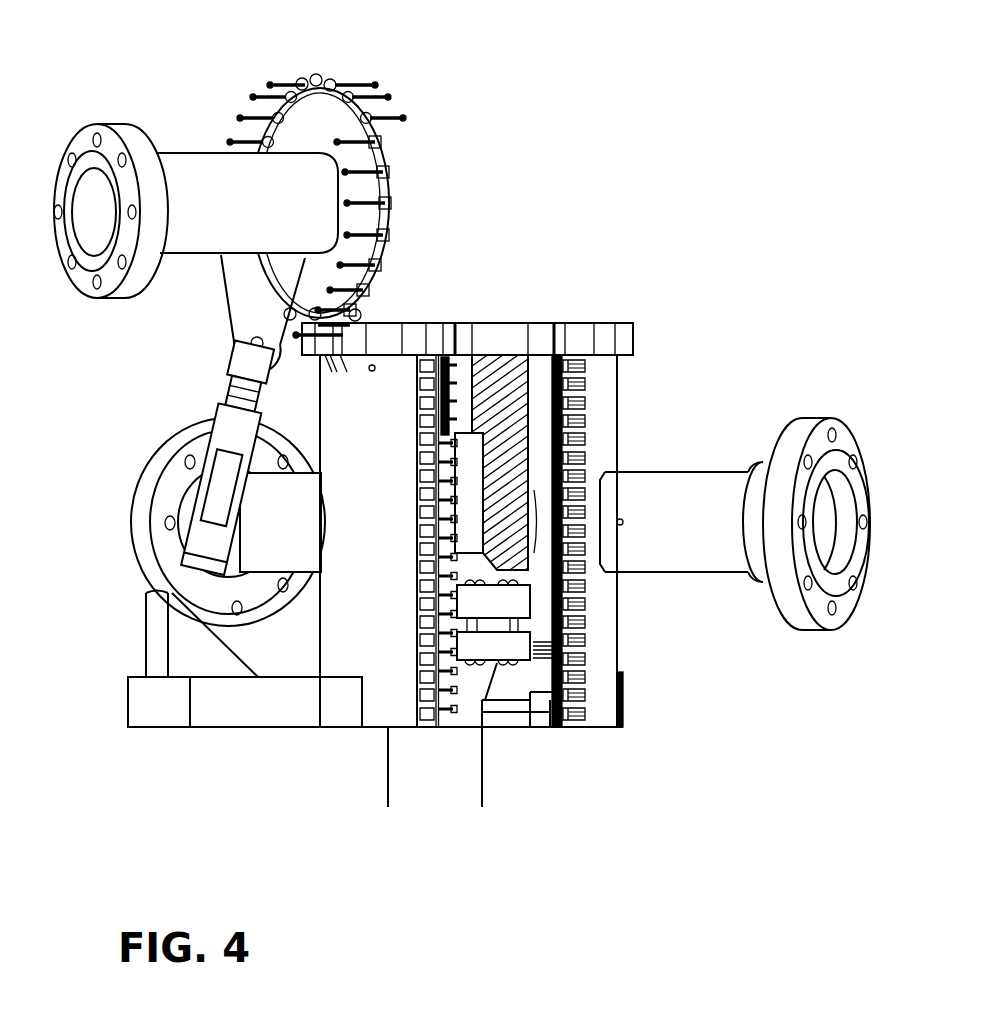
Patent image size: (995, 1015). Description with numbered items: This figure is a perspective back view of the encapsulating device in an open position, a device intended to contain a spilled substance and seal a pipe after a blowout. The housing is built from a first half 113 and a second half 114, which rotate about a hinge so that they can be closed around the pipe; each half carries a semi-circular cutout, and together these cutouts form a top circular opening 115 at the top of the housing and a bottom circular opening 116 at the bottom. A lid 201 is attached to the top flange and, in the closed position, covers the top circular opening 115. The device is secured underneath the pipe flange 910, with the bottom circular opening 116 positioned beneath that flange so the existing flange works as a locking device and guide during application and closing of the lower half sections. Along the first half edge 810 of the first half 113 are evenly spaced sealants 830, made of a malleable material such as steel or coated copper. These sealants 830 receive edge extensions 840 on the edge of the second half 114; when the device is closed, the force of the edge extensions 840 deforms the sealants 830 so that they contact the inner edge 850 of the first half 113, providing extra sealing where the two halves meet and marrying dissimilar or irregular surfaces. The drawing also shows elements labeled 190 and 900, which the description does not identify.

The lid 201 is at (305, 118).
The first half 113 is at (385, 497).
The top circular opening 115 is at (522, 323).
The inner edge 850 is at (418, 352).
The first half edge 810 is at (455, 432).
The sealants 830 is at (485, 352).
The edge extensions 840 is at (586, 389).
The second half 114 is at (620, 432).
The pipe flange 910 is at (513, 602).
The lower bolt 190 is at (452, 717).
The bottom circular opening 116 is at (510, 731).
The stem 900 is at (488, 776).